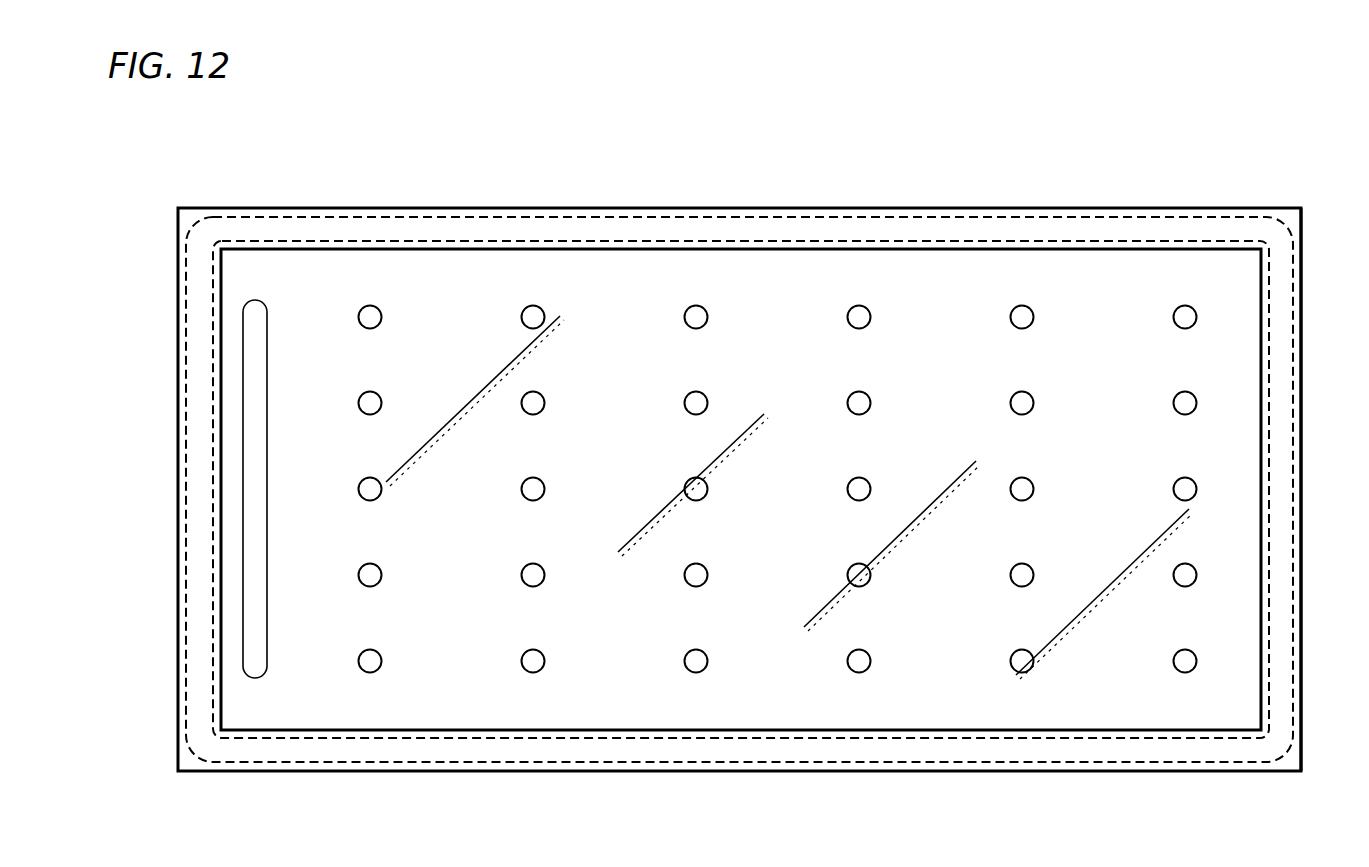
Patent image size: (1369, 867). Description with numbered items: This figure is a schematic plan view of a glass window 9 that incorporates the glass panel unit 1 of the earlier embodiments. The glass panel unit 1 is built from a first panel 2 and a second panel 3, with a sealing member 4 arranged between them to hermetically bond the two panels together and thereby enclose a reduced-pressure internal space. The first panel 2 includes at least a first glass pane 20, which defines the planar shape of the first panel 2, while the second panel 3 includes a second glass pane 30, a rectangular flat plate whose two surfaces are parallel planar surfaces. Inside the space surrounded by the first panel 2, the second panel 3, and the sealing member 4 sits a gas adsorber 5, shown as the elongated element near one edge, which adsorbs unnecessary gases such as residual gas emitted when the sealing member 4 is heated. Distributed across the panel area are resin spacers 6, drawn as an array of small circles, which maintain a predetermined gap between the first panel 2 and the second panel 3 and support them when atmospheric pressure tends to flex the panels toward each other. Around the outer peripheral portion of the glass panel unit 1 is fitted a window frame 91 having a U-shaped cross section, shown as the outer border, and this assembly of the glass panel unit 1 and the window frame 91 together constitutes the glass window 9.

The glass window 9 is at (1283, 158).
The glass panel unit 1 is at (1282, 448).
The first panel 2 is at (1283, 309).
The second panel 3 is at (1300, 723).
The sealing member 4 is at (1186, 229).
The gas adsorber 5 is at (255, 531).
The spacers 6 is at (699, 320).
The first glass pane 20 is at (1077, 266).
The second glass pane 30 is at (1300, 606).
The window frame 91 is at (982, 227).